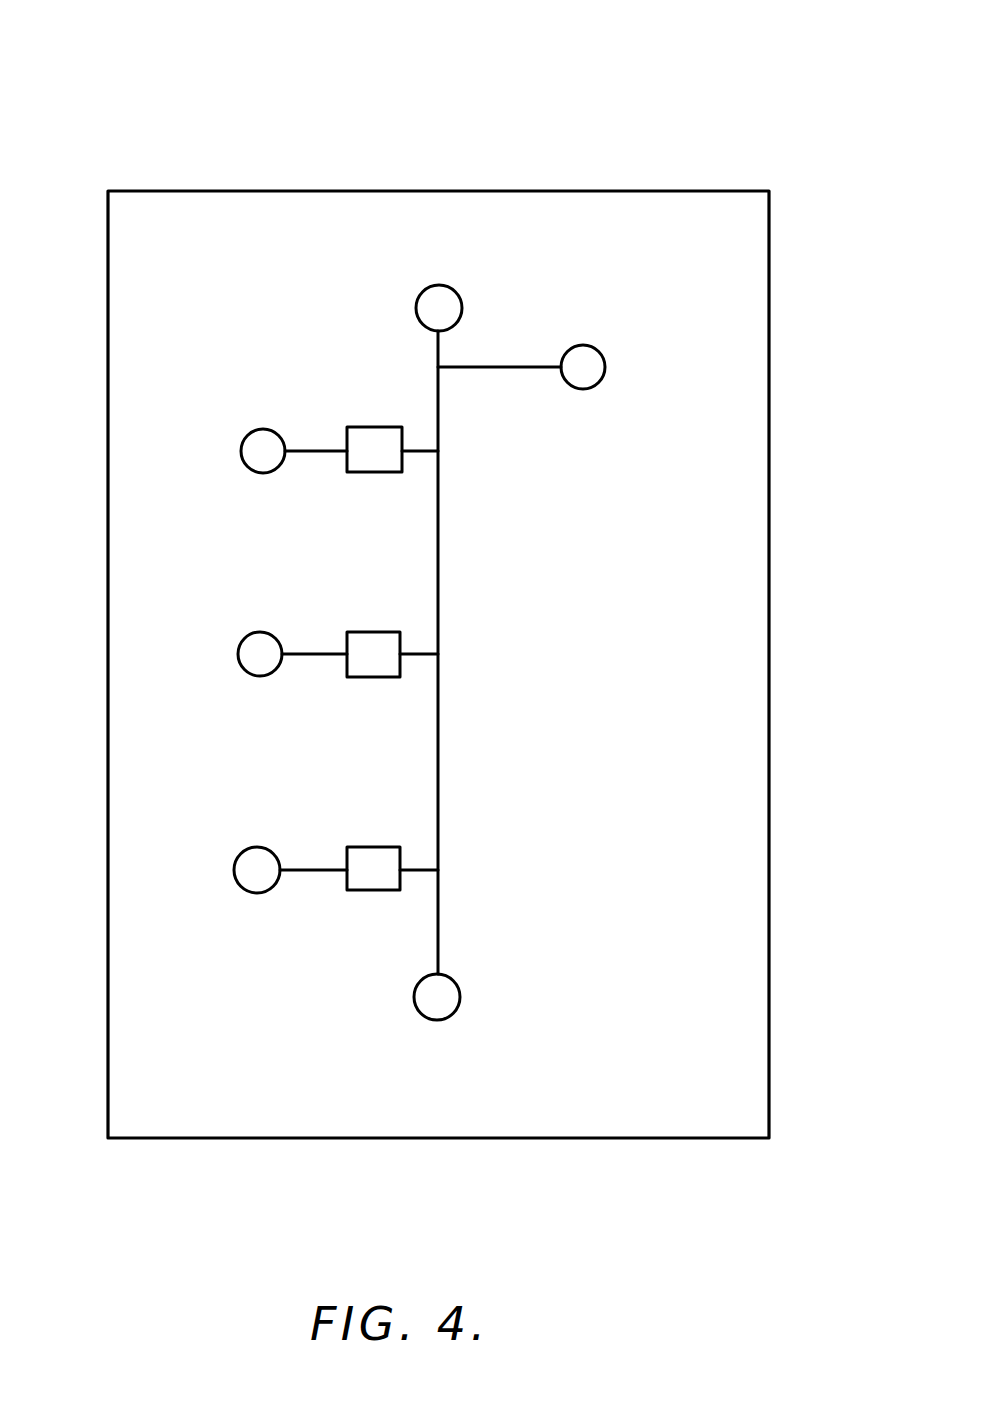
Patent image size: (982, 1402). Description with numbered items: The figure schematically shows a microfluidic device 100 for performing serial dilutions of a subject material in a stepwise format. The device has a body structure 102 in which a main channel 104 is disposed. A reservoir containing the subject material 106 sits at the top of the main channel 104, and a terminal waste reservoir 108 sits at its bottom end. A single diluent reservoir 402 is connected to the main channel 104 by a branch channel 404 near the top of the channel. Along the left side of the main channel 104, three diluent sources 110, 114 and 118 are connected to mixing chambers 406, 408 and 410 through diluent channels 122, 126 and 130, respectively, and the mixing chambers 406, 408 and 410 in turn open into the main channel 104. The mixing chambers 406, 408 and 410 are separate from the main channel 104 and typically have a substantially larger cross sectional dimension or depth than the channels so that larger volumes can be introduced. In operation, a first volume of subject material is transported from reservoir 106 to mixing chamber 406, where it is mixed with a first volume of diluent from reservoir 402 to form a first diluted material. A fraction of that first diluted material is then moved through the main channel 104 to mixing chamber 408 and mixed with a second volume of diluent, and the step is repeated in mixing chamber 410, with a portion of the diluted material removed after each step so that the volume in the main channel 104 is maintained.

The microfluidic device 100 is at (135, 70).
The body structure 102 is at (590, 190).
The main channel 104 is at (441, 503).
The subject material reservoir 106 is at (461, 308).
The waste reservoir 108 is at (460, 997).
The diluent source 110 is at (241, 445).
The diluent source 114 is at (238, 654).
The diluent source 118 is at (235, 866).
The diluent channel 122 is at (308, 451).
The diluent channel 126 is at (313, 654).
The diluent channel 130 is at (305, 870).
The diluent reservoir 402 is at (605, 363).
The branch connection 404 is at (492, 369).
The mixing chamber 406 is at (387, 472).
The mixing chamber 408 is at (375, 677).
The mixing chamber 410 is at (372, 890).